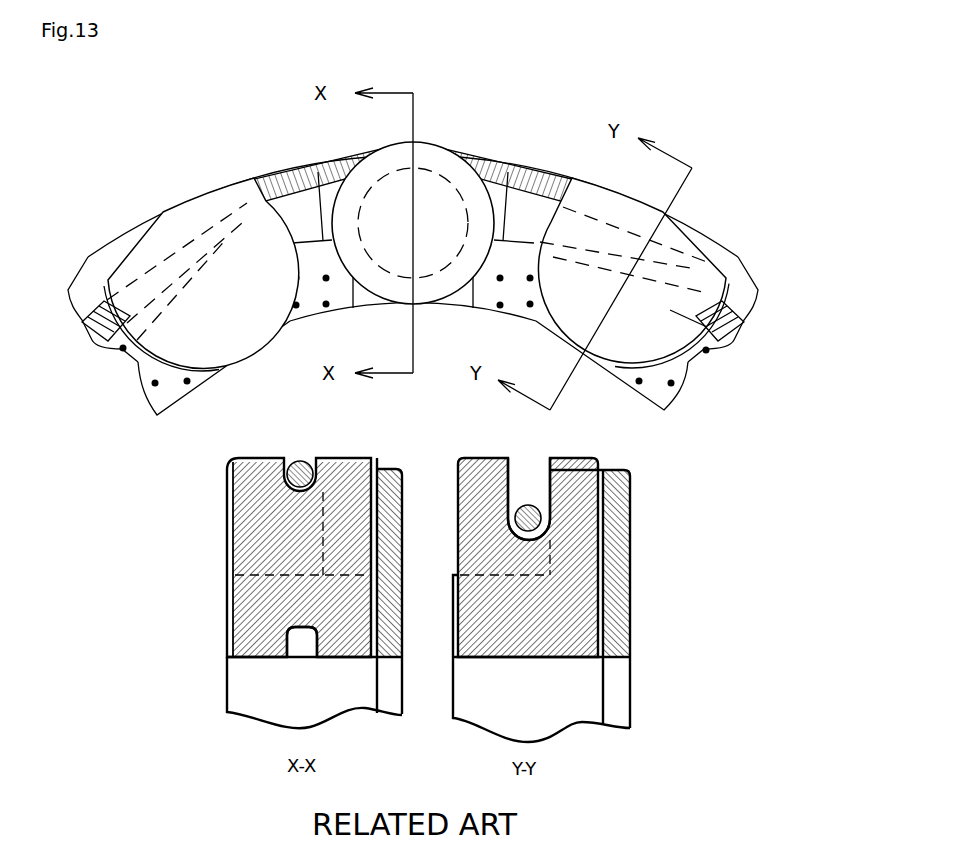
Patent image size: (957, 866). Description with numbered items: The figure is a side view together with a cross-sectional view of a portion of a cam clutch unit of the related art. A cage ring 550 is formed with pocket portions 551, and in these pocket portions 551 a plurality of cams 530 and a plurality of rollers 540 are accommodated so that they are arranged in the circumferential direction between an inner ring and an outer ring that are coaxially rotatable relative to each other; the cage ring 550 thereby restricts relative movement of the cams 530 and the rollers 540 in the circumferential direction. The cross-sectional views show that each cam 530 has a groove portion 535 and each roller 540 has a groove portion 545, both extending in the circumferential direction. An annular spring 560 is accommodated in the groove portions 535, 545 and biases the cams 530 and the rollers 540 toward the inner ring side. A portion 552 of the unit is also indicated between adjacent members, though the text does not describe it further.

The cam 530 is at (180, 220).
The groove portion 535 is at (535, 462).
The roller 540 is at (393, 163).
The groove portion 545 is at (305, 636).
The cage ring 550 is at (543, 167).
The pocket portion 551 is at (107, 268).
The connecting bridge 552 is at (484, 163).
The annular spring 560 is at (300, 177).